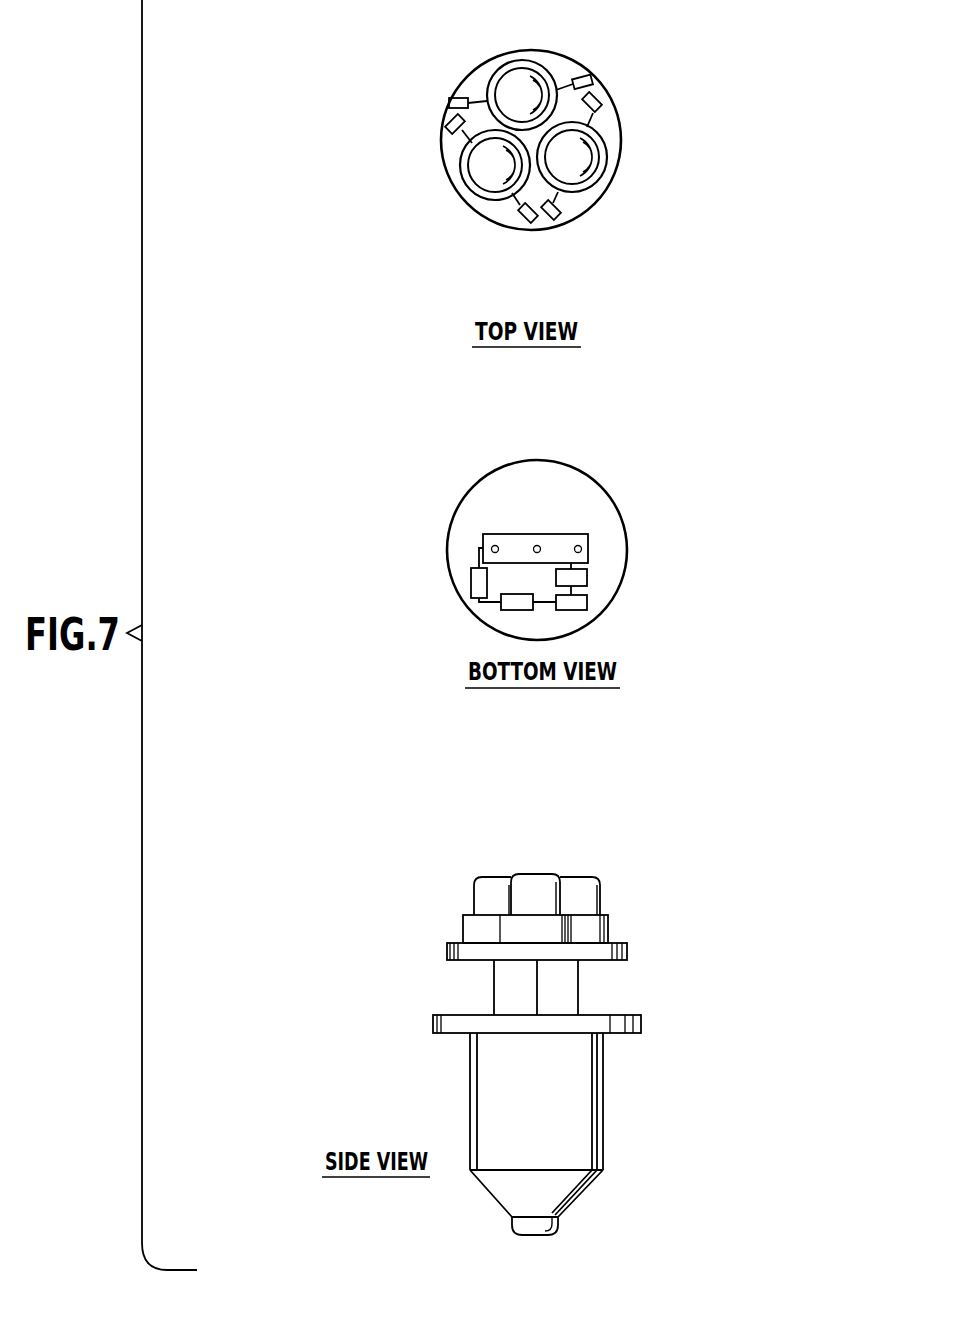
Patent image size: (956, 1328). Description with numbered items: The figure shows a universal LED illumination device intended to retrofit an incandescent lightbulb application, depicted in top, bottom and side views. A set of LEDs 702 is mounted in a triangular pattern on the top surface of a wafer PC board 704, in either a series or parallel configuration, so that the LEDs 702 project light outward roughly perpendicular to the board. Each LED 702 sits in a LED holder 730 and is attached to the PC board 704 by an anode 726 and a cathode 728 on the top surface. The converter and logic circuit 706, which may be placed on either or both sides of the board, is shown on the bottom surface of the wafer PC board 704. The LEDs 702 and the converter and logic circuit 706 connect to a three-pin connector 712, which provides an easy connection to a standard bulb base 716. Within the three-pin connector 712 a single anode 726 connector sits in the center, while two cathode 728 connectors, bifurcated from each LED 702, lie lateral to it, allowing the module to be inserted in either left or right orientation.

The LEDs 702 is at (577, 875).
The wafer PC board 704 is at (477, 207).
The converter and logic circuit 706 is at (471, 580).
The 3-pin connector 712 is at (284, 975).
The standard bulb base 716 is at (603, 1122).
The anode 726 is at (420, 1092).
The cathode 728 is at (697, 1023).
The LED holder 730 is at (598, 188).